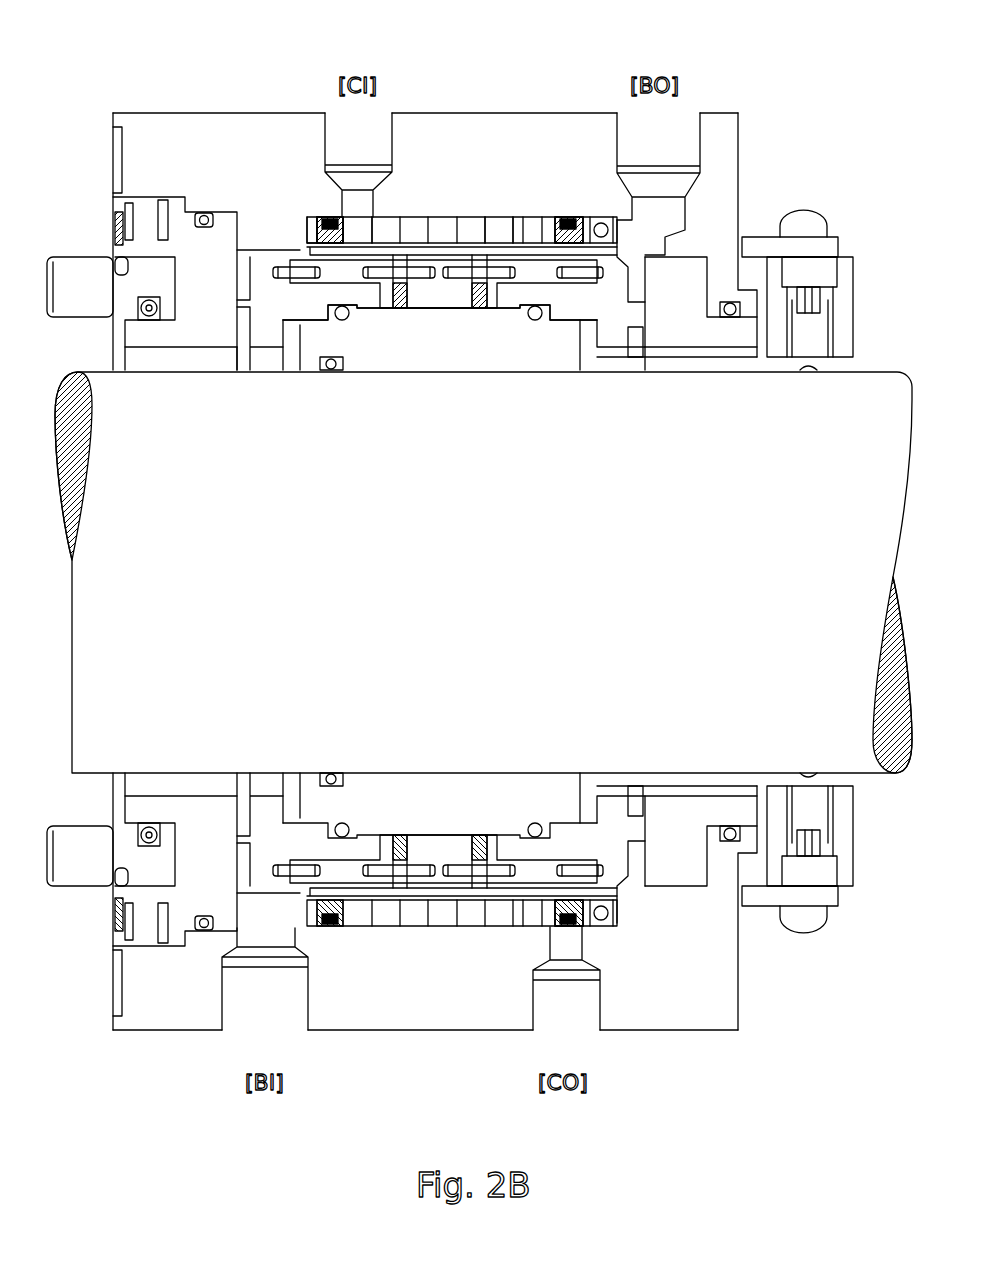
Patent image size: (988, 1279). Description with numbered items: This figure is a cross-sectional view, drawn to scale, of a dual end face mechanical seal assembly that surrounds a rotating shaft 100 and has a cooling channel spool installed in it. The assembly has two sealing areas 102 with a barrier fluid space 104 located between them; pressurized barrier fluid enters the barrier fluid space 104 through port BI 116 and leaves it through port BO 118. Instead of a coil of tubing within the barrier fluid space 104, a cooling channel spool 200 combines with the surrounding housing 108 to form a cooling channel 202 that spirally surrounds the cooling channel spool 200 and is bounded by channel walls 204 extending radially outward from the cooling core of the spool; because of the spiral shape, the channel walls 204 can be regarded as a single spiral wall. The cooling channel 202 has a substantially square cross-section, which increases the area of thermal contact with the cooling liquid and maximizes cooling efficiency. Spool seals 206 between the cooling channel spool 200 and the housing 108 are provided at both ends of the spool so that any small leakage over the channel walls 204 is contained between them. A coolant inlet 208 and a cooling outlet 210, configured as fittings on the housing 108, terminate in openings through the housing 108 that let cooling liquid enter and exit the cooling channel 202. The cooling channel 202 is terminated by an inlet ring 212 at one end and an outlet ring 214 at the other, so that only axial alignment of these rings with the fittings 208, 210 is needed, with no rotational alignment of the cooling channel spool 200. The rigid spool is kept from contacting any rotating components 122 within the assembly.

The rotating shaft 100 is at (700, 606).
The sealing areas 102 is at (233, 347).
The barrier fluid space 104 is at (262, 915).
The housing 108 is at (215, 171).
The port BI 116 is at (283, 1006).
The port BO 118 is at (675, 161).
The rotating components 122 is at (357, 277).
The cooling channel spool 200 is at (302, 234).
The cooling channel 202 is at (493, 230).
The channel walls 204 is at (470, 217).
The spool seals 206 is at (312, 226).
The coolant inlet 208 is at (378, 151).
The cooling outlet 210 is at (583, 1016).
The inlet ring 212 is at (372, 217).
The outlet ring 214 is at (563, 913).